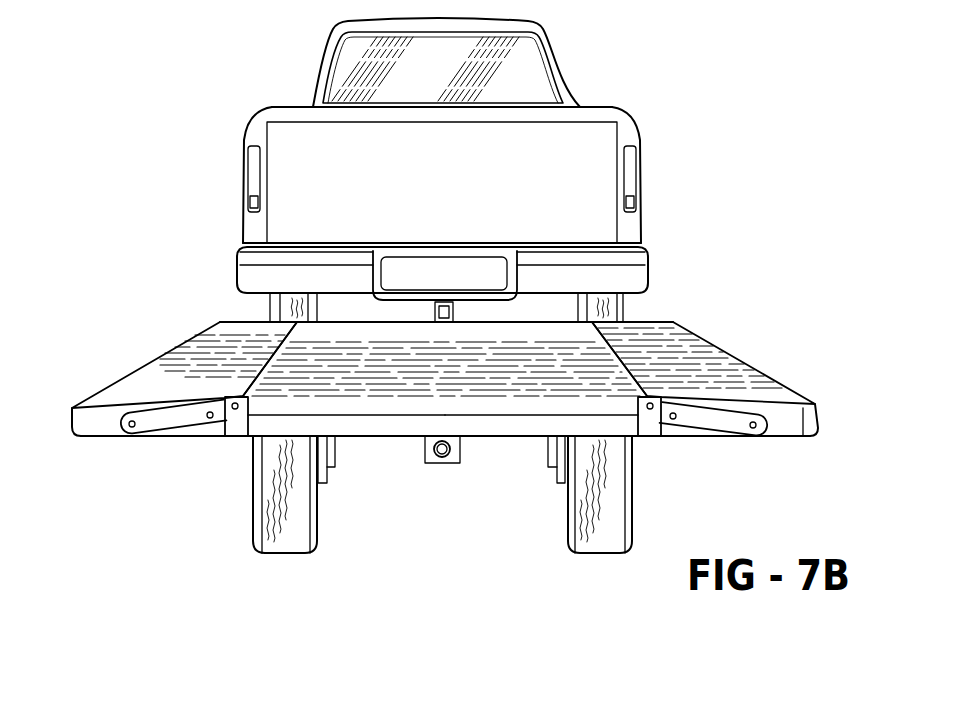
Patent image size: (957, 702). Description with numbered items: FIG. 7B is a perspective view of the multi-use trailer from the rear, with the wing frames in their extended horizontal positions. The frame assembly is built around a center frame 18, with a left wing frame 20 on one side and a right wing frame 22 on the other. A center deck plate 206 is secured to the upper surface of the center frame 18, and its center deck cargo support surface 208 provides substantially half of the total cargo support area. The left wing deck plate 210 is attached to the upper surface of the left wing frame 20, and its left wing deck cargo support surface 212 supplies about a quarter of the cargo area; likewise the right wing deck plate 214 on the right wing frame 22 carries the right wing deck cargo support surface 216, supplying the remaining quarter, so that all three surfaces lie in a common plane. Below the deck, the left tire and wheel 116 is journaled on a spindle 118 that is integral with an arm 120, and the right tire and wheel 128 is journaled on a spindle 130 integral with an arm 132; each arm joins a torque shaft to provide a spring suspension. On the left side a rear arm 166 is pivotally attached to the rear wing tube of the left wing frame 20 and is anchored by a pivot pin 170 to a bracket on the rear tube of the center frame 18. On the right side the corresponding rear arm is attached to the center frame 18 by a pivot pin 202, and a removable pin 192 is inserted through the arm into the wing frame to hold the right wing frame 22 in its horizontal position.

The center frame 18 is at (410, 425).
The left wing frame 20 is at (132, 352).
The right wing frame 22 is at (767, 377).
The left tire and wheel 116 is at (253, 488).
The spindle 118 is at (323, 484).
The arm 120 is at (337, 468).
The right tire and wheel 128 is at (627, 527).
The spindle 130 is at (564, 484).
The arm 132 is at (547, 467).
The rear arm 166 is at (169, 423).
The pivot pin 170 is at (651, 410).
The removable pin 192 is at (211, 420).
The pivot pin 202 is at (235, 410).
The center deck plate 206 is at (352, 395).
The center deck cargo support surface 208 is at (485, 404).
The left wing deck plate 210 is at (218, 342).
The left wing deck cargo support surface 212 is at (103, 405).
The right wing deck plate 214 is at (702, 348).
The right wing deck cargo support surface 216 is at (793, 403).